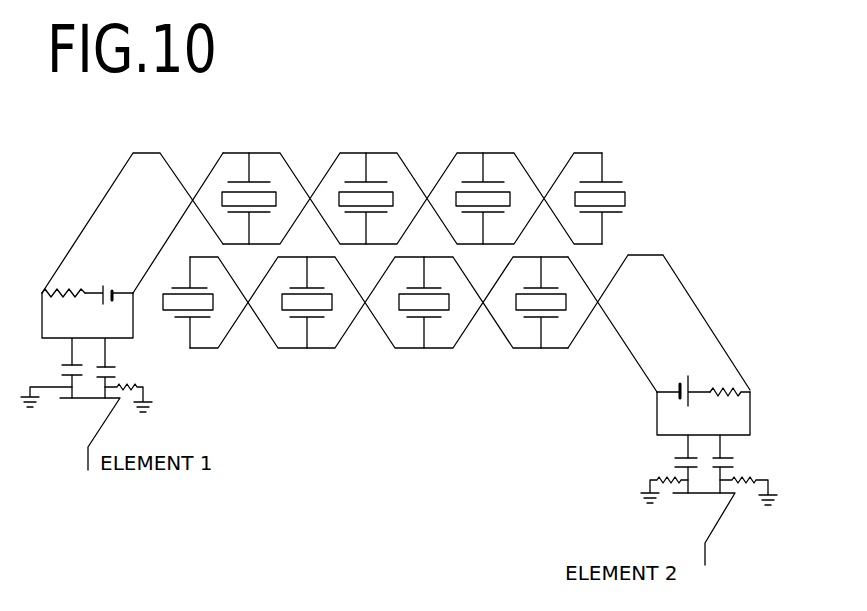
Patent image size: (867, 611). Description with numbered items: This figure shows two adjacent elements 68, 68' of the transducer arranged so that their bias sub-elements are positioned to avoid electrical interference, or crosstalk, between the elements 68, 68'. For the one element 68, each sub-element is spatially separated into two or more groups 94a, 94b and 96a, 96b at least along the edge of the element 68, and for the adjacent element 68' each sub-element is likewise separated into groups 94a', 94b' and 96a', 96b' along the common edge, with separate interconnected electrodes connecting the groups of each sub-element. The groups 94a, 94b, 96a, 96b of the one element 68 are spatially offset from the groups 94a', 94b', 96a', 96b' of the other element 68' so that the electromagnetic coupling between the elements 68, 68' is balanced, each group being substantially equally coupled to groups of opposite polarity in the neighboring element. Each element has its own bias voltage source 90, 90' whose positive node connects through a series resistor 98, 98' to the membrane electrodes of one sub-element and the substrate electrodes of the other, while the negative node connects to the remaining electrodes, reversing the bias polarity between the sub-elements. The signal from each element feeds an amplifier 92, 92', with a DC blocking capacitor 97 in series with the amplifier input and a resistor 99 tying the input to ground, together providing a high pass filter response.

The element 68 is at (379, 221).
The element 68' is at (485, 323).
The group 94a is at (258, 179).
The group 94b is at (512, 179).
The group 96a is at (389, 179).
The group 96b is at (630, 179).
The group 94a' is at (310, 323).
The group 94b' is at (548, 322).
The group 96a' is at (194, 323).
The group 96b' is at (441, 322).
The bias voltage source 90 is at (106, 277).
The bias voltage source 90' is at (675, 376).
The series resistor 98 is at (46, 281).
The series resistor 98' is at (746, 374).
The DC blocking capacitor 97 is at (63, 368).
The resistor 99 is at (52, 392).
The amplifier 92 is at (100, 434).
The amplifier 92' is at (726, 529).